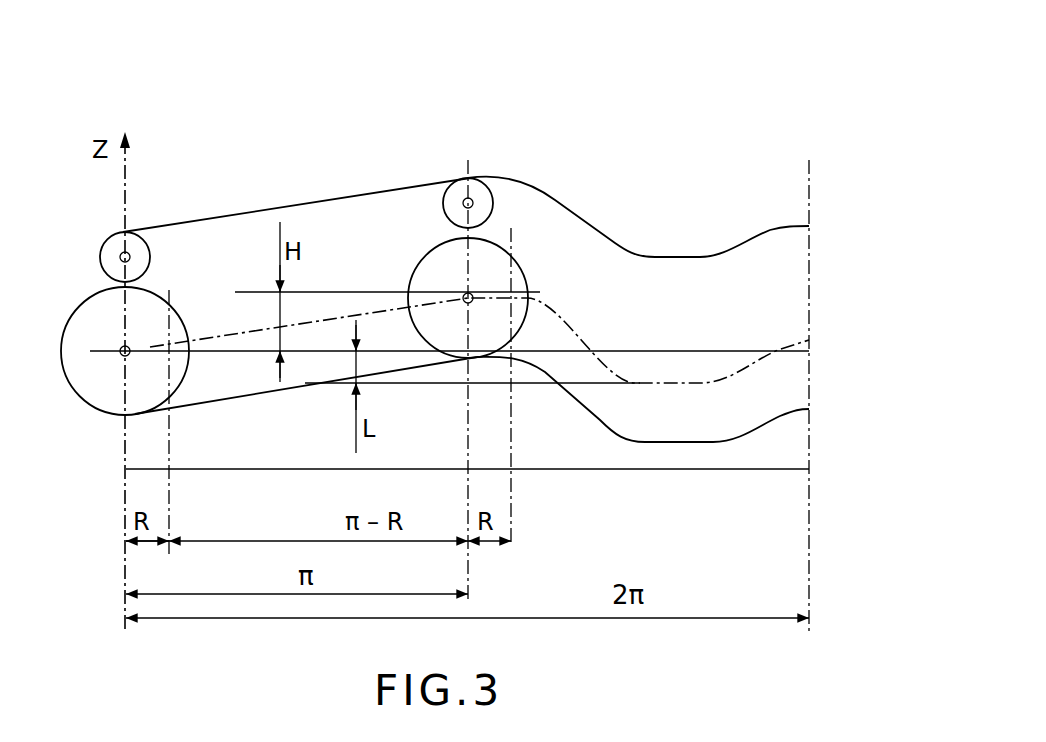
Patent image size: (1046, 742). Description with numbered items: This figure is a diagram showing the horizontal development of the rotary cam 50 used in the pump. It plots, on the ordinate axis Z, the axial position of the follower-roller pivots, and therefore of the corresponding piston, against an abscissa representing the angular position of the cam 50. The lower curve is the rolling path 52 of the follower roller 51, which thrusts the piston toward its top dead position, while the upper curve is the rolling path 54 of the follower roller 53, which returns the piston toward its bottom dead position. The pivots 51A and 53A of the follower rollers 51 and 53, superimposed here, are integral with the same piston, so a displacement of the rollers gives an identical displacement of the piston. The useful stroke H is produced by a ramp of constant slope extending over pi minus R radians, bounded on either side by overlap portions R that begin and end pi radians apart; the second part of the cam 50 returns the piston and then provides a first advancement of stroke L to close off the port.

The rotary cam 50 is at (792, 207).
The follower roller 51 is at (83, 328).
The pivot 51A is at (121, 355).
The rolling path 52 is at (680, 442).
The follower roller 53 is at (137, 245).
The pivot 53A is at (120, 252).
The rolling path 54 is at (590, 235).